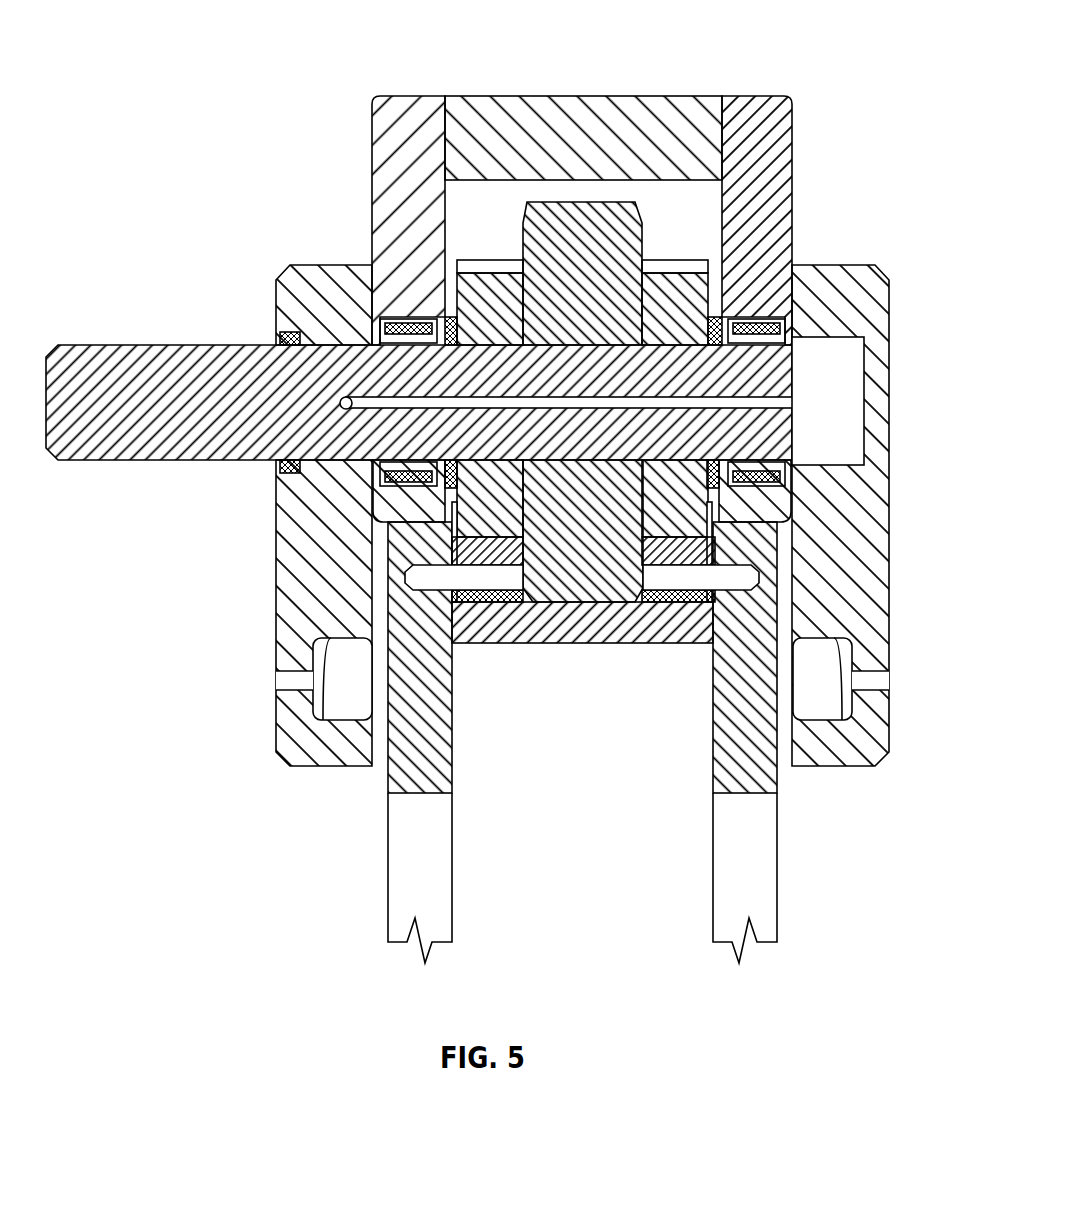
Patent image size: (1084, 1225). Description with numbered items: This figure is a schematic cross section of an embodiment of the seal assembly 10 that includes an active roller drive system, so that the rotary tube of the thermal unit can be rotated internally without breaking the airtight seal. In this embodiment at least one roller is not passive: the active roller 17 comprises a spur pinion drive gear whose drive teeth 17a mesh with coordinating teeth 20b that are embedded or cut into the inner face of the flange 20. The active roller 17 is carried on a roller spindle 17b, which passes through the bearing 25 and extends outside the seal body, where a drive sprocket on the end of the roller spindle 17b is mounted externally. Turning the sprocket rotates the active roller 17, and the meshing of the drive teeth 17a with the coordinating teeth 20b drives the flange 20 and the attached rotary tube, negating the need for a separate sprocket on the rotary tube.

The seal assembly 10 is at (530, 42).
The bearing 25 is at (400, 313).
The active roller 17 is at (627, 227).
The roller spindle 17b is at (793, 401).
The drive teeth 17a is at (455, 545).
The coordinating teeth 20b is at (465, 580).
The flange 20 is at (577, 632).